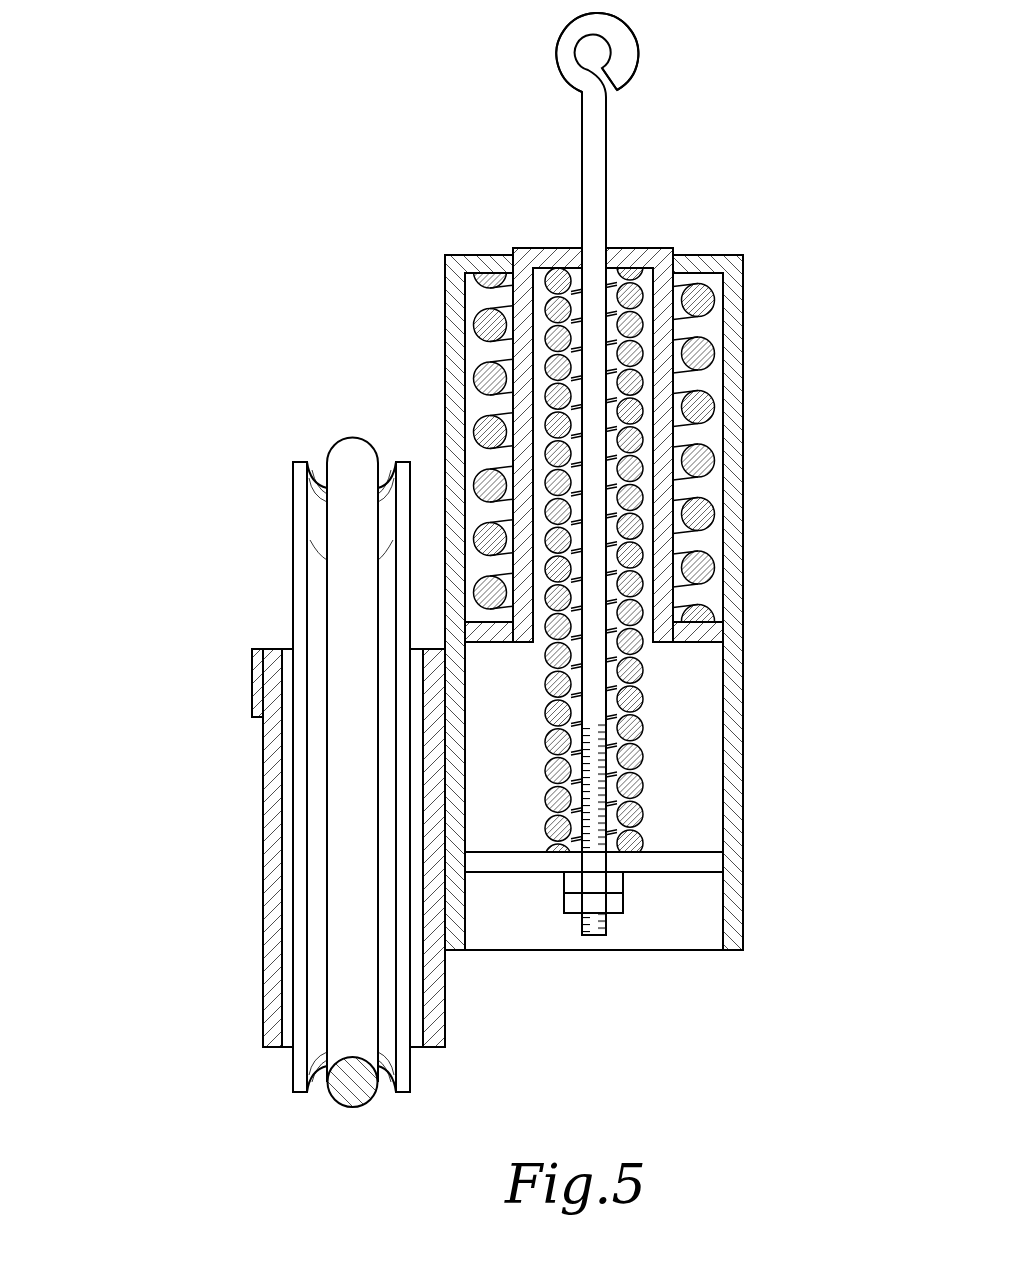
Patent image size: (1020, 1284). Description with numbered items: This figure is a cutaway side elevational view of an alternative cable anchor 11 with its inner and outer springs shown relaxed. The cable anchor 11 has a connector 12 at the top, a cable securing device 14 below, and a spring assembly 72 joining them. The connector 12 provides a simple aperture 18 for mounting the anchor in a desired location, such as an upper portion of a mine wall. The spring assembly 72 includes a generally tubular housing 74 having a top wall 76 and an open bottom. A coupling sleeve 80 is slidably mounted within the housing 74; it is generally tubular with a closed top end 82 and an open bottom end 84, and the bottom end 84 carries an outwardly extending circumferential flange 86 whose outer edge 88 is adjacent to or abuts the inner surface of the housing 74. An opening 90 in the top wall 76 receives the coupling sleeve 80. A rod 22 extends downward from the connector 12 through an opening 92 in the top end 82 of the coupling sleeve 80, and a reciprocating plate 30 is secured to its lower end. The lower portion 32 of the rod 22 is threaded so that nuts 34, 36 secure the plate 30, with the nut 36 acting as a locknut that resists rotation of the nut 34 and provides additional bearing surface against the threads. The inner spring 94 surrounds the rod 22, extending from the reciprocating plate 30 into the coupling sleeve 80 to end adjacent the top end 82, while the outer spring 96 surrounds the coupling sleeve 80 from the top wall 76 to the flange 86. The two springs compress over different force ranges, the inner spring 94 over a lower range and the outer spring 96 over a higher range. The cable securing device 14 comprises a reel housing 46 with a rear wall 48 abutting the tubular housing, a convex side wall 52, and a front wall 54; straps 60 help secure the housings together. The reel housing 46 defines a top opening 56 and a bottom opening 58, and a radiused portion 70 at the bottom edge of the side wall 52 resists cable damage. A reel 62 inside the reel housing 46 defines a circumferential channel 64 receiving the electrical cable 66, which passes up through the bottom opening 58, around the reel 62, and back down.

The cable anchor 11 is at (792, 231).
The connector 12 is at (577, 52).
The cable securing device 14 is at (231, 1024).
The aperture 18 is at (605, 55).
The rod 22 is at (600, 142).
The reciprocating plate 30 is at (666, 857).
The lower portion of the rod 32 is at (590, 937).
The nut 34 is at (615, 885).
The nut 36 is at (568, 904).
The reel housing 46 is at (262, 818).
The rear wall 48 is at (440, 812).
The side wall 52 is at (420, 993).
The front wall 54 is at (268, 875).
The top opening 56 is at (271, 621).
The bottom opening 58 is at (273, 1076).
The straps 60 is at (252, 689).
The reel 62 is at (293, 513).
The circumferential channel 64 is at (322, 466).
The electrical cable 66 is at (336, 756).
The radiused portion 70 is at (415, 1050).
The spring assembly 72 is at (368, 334).
The tubular housing 74 is at (735, 795).
The top wall 76 is at (470, 256).
The coupling sleeve 80 is at (668, 383).
The top end 82 is at (631, 248).
The bottom end 84 is at (659, 662).
The circumferential flange 86 is at (703, 643).
The outer edge 88 is at (470, 641).
The opening 90 is at (674, 252).
The opening 92 is at (582, 250).
The inner spring 94 is at (545, 750).
The outer spring 96 is at (700, 463).